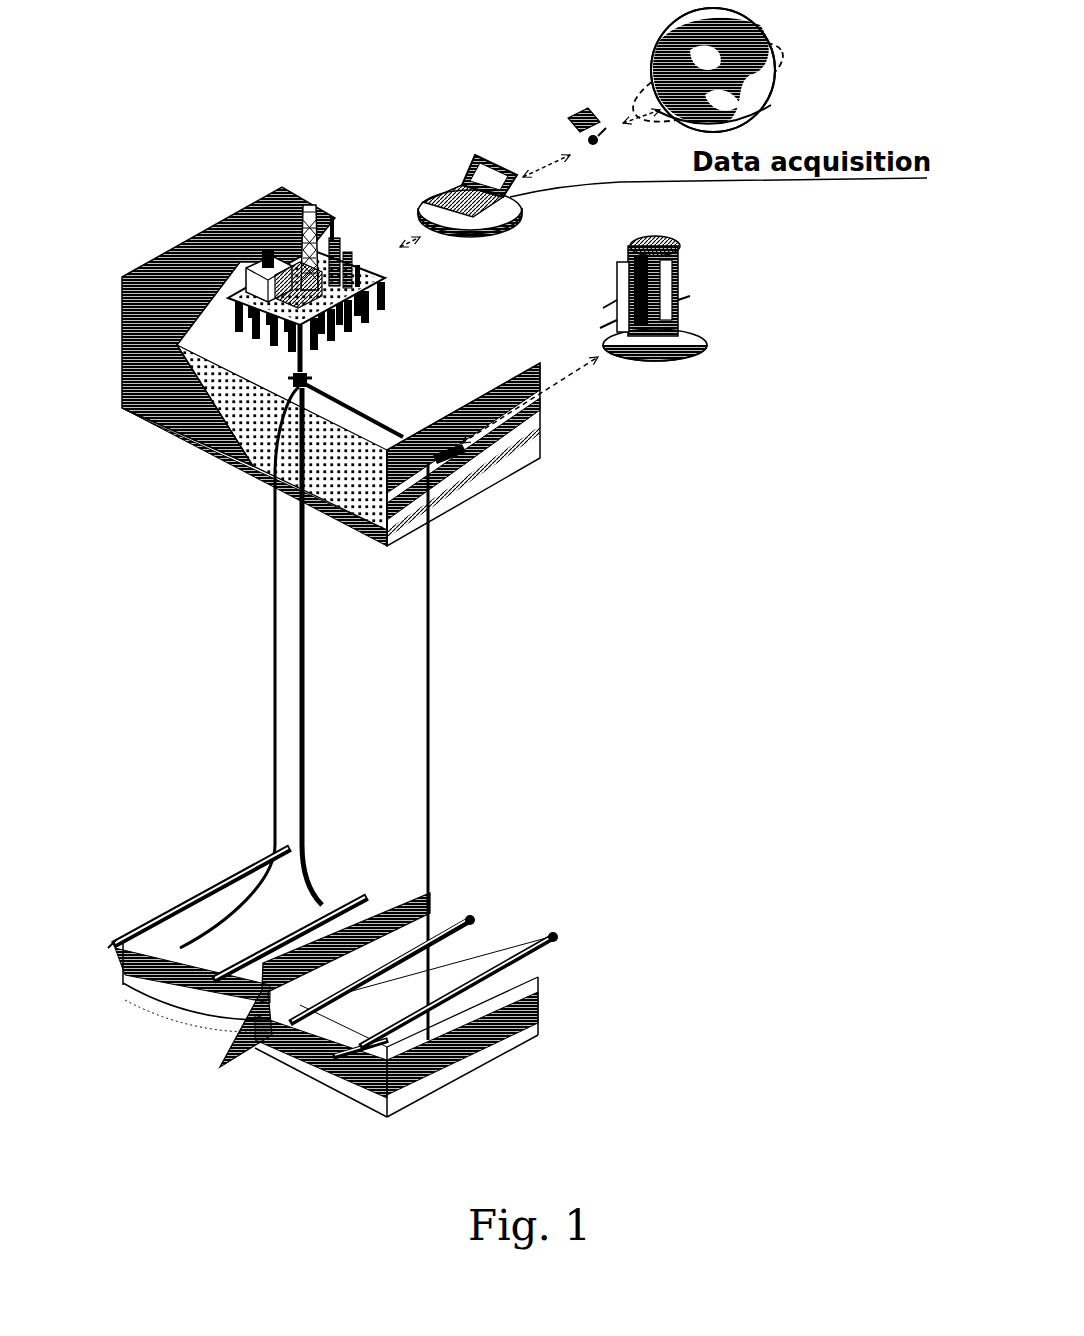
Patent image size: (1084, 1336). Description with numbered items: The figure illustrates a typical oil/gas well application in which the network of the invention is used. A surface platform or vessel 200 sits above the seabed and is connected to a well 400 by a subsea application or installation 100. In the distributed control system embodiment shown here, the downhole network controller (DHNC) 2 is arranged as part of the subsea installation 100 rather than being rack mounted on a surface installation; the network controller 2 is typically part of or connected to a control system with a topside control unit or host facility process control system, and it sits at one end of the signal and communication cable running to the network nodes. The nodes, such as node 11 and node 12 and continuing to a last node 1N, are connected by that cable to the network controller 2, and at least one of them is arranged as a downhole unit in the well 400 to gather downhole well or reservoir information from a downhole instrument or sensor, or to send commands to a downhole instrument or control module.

The surface platform or vessel 200 is at (240, 293).
The subsea application or installation 100 is at (300, 385).
The downhole network controller (DHNC) 2 is at (467, 448).
The well 400 is at (237, 877).
The well 1N is at (173, 907).
The node 11 is at (390, 1043).
The node 12 is at (463, 997).